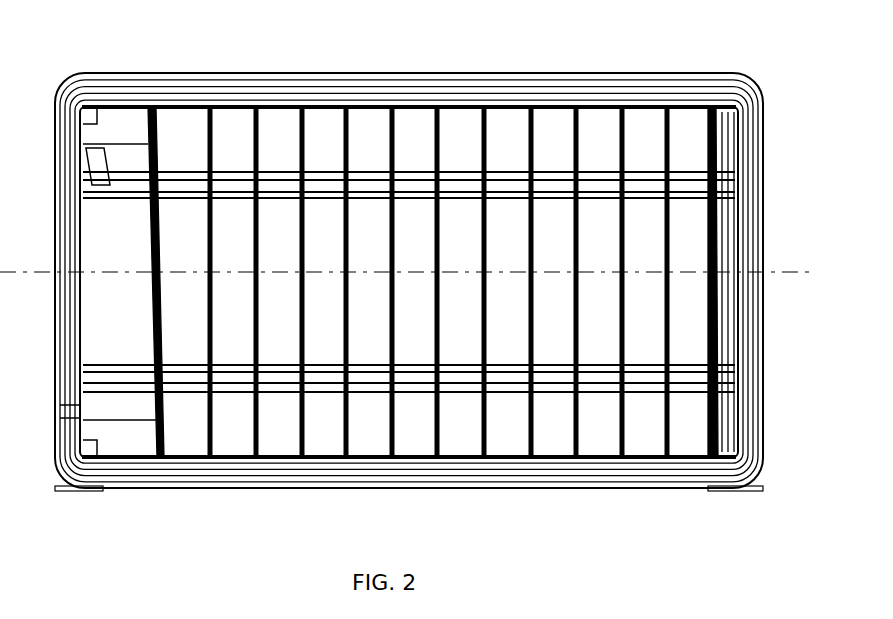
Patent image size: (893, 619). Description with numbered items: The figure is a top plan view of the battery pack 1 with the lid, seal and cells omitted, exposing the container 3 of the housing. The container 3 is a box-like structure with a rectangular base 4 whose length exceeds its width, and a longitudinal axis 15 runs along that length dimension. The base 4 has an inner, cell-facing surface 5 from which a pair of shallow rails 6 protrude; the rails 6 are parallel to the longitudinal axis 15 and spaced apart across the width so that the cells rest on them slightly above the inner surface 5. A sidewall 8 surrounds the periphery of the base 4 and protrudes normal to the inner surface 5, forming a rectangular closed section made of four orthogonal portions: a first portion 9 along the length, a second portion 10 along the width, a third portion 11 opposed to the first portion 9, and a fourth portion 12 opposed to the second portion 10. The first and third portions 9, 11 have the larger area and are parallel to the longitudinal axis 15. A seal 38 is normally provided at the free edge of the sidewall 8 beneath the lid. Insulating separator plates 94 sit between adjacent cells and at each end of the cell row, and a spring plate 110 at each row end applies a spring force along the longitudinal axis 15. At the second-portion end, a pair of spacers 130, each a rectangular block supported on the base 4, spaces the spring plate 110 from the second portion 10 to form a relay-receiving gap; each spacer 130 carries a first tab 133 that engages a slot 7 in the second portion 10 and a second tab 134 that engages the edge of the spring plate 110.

The battery pack 1 is at (144, 56).
The container 3 is at (318, 74).
The slot 7 is at (58, 115).
The base 4 is at (453, 133).
The inner surface 5 is at (505, 440).
The rails 6 is at (364, 177).
The insulating separator plate 94 is at (632, 148).
The third portion 11 is at (543, 486).
The fourth portion 12 is at (764, 335).
The first portion 9 is at (648, 78).
The longitudinal axis 15 is at (784, 268).
The sidewall 8 is at (150, 322).
The second portion 10 is at (62, 413).
The first tab 133 is at (74, 456).
The seal 38 is at (64, 490).
The spring plate 110 is at (101, 490).
The spacer 130 is at (110, 77).
The second tab 134 is at (144, 110).